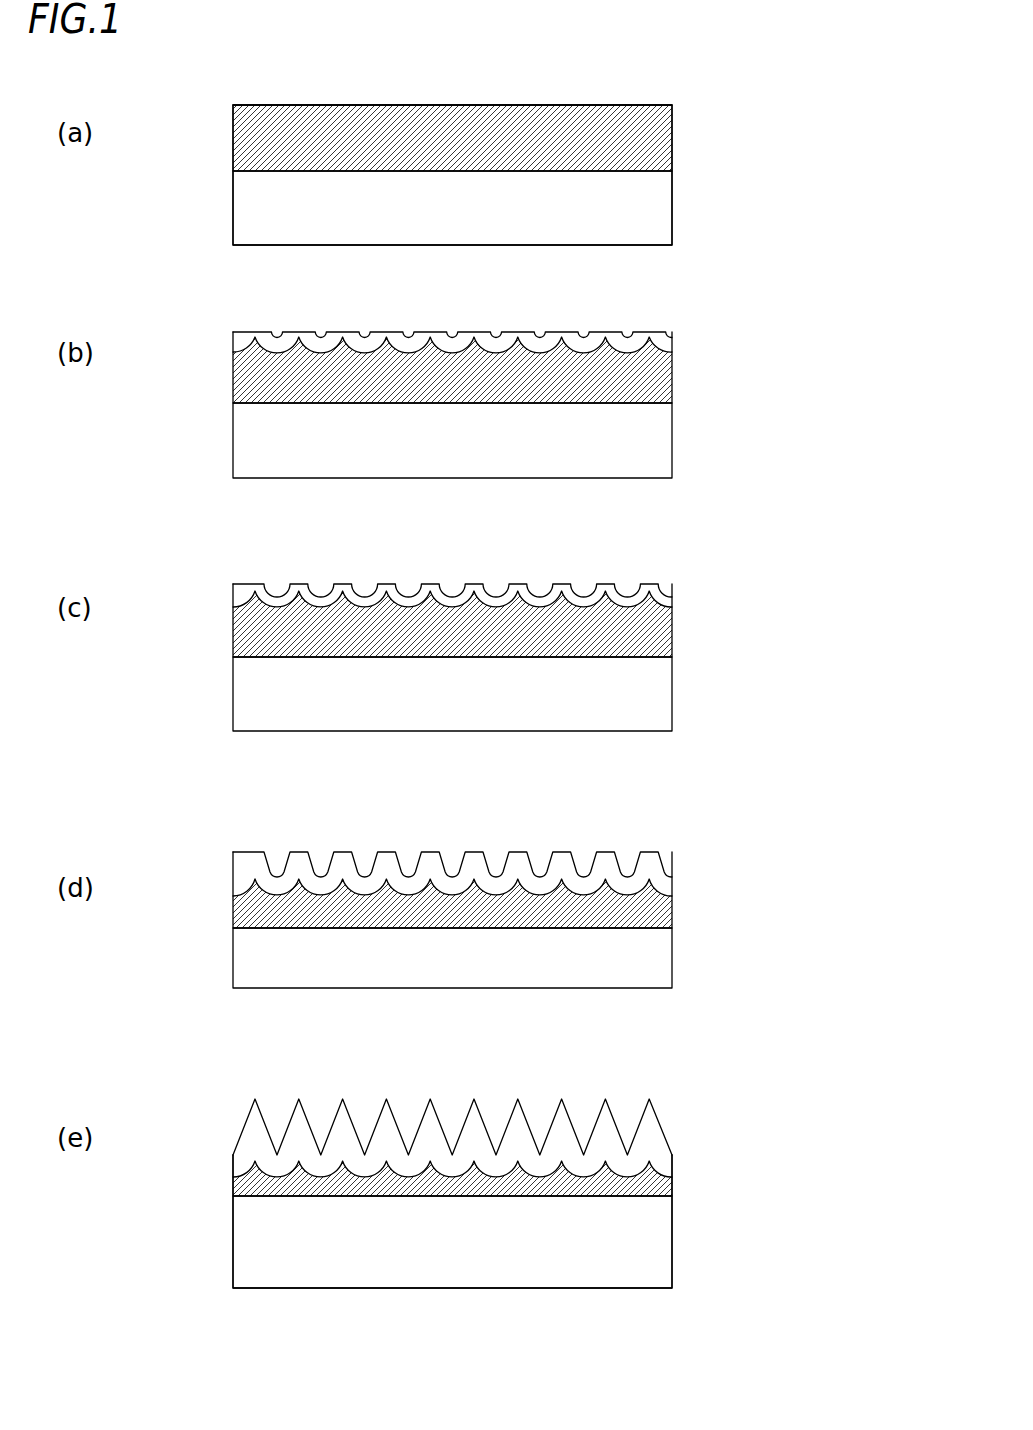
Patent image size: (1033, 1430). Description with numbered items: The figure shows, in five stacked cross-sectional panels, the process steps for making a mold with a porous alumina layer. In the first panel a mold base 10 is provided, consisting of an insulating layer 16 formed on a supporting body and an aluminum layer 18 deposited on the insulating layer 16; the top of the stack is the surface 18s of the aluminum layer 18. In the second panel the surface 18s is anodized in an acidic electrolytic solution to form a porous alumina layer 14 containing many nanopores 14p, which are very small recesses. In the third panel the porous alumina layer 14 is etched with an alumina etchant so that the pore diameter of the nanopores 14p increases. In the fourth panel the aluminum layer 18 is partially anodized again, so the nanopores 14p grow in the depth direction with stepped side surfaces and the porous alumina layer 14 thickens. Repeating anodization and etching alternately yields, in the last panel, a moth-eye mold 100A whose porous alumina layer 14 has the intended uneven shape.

The mold base 10 is at (720, 99).
The porous alumina layer 14 is at (514, 720).
The nanopores 14p is at (630, 320).
The insulating layer 16 is at (660, 213).
The aluminum layer 18 is at (667, 143).
The surface of the aluminum layer 18s is at (483, 103).
The moth-eye mold 100A is at (754, 1092).